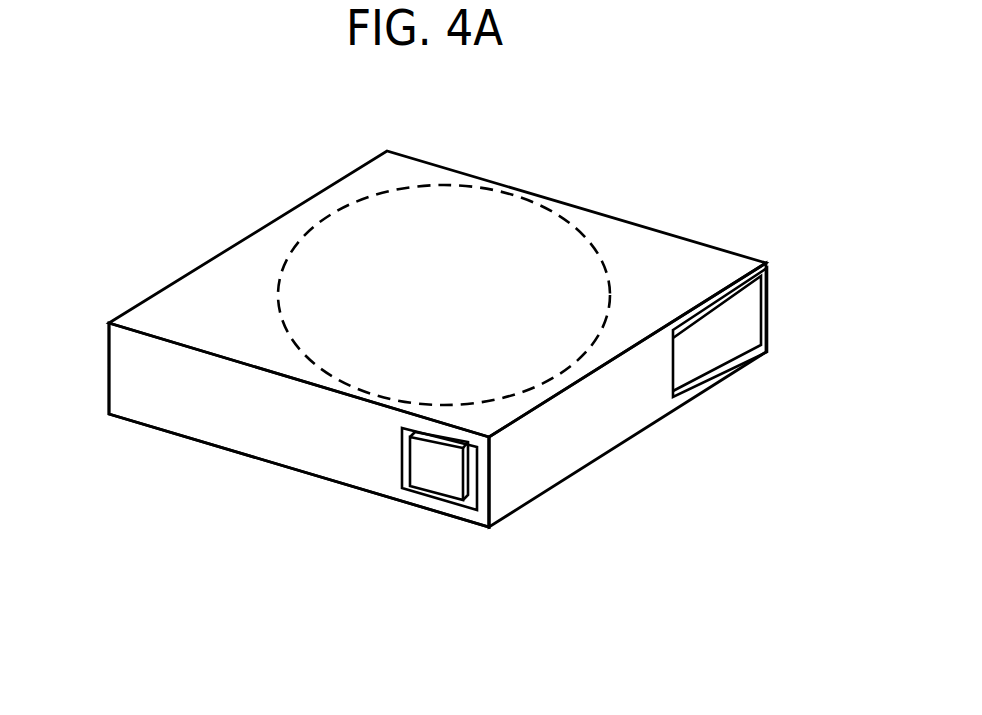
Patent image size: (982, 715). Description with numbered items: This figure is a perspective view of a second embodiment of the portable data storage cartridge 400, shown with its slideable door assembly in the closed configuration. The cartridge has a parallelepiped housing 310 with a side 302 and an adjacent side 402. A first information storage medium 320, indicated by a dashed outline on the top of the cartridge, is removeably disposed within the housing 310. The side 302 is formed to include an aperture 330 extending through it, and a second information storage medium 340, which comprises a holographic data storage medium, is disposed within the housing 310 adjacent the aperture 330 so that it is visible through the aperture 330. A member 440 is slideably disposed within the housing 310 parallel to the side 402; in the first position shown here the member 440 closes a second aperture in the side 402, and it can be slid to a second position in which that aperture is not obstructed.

The portable data storage cartridge 400 is at (438, 393).
The housing 310 is at (285, 468).
The side 302 is at (273, 435).
The side 402 is at (610, 437).
The first information storage medium 320 is at (458, 313).
The aperture 330 is at (443, 521).
The second information storage medium 340 is at (456, 482).
The member 440 is at (740, 345).